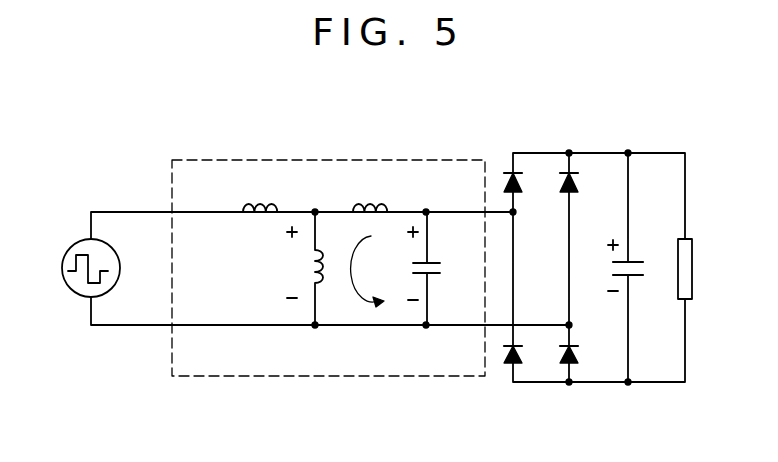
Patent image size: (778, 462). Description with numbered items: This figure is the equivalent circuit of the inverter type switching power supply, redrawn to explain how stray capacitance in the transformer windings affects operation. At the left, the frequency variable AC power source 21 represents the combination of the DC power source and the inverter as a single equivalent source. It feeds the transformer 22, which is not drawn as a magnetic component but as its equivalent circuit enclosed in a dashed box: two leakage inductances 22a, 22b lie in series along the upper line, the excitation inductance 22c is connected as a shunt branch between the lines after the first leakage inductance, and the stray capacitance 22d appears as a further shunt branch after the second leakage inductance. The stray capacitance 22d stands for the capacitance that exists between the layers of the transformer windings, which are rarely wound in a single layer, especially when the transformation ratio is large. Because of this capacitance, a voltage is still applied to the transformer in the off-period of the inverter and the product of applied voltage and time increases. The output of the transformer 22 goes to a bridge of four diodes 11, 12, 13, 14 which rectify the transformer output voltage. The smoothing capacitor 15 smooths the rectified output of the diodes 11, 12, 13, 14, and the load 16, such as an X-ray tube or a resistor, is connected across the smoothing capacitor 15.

The frequency variable AC power source 21 is at (70, 249).
The transformer 22 is at (205, 160).
The leakage inductance 22a is at (261, 207).
The leakage inductance 22b is at (370, 207).
The excitation inductance 22c is at (308, 269).
The stray capacitance 22d is at (445, 270).
The diode 11 is at (527, 181).
The diode 12 is at (525, 355).
The diode 13 is at (582, 183).
The diode 14 is at (581, 357).
The smoothing capacitor 15 is at (637, 255).
The load 16 is at (697, 257).